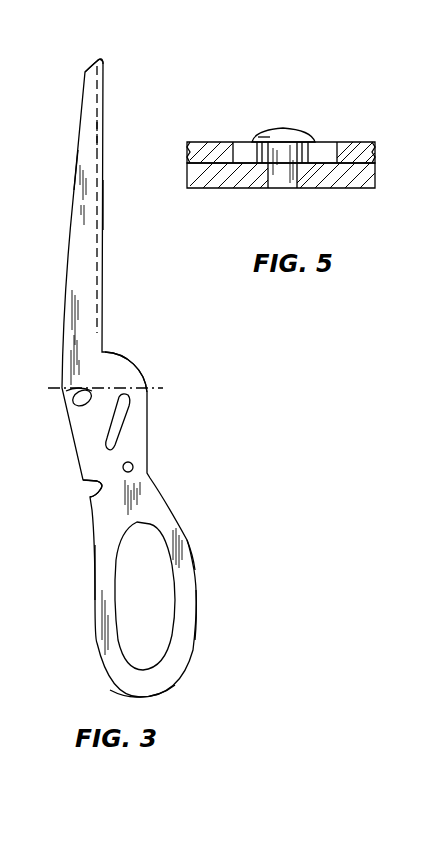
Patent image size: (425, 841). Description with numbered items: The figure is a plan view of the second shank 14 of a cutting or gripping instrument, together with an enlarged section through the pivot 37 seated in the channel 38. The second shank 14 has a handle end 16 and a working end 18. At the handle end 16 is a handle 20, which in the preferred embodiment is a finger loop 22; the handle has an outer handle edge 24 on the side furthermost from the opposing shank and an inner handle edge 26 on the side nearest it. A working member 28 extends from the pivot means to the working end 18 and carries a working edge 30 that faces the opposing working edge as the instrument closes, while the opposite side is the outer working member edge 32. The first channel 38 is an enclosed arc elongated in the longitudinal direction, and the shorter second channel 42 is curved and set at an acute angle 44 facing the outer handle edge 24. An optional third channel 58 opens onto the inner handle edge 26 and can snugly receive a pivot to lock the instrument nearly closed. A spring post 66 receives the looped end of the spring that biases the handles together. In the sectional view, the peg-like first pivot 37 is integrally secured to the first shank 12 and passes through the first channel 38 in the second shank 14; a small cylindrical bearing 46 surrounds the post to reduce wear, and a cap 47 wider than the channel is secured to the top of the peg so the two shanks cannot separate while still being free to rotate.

In FIG. 5, the first shank 12 is at (347, 180).
In FIG. 3, the second shank 14 is at (113, 320).
In FIG. 5, the second shank 14 is at (363, 150).
In FIG. 3, the handle end 16 is at (148, 683).
In FIG. 3, the working end 18 is at (87, 70).
In FIG. 3, the handle 20 is at (190, 602).
In FIG. 3, the finger loop 22 is at (154, 581).
In FIG. 3, the outer handle edge 24 is at (236, 529).
In FIG. 3, the inner handle edge 26 is at (95, 570).
In FIG. 3, the working member 28 is at (87, 140).
In FIG. 3, the working edge 30 is at (146, 199).
In FIG. 3, the outer working member edge 32 is at (75, 175).
In FIG. 5, the first pivot 37 is at (285, 175).
In FIG. 3, the first channel 38 is at (125, 428).
In FIG. 5, the first channel 38 is at (328, 152).
In FIG. 3, the second channel 42 is at (75, 407).
In FIG. 3, the acute angle 44 is at (88, 392).
In FIG. 5, the cylindrical bearing 46 is at (252, 150).
In FIG. 5, the cap 47 is at (278, 132).
In FIG. 3, the third channel 58 is at (92, 497).
In FIG. 3, the spring post 66 is at (135, 467).